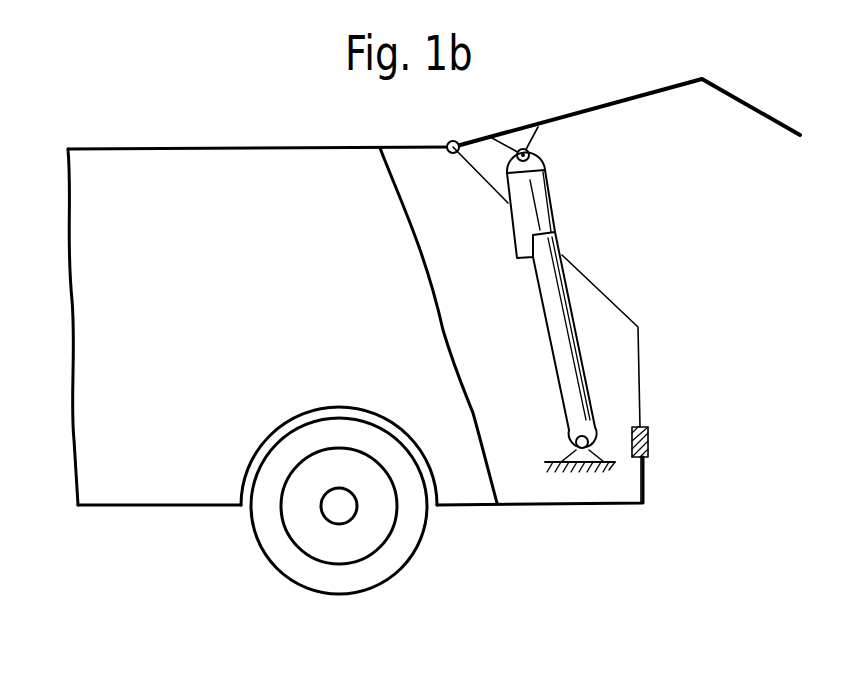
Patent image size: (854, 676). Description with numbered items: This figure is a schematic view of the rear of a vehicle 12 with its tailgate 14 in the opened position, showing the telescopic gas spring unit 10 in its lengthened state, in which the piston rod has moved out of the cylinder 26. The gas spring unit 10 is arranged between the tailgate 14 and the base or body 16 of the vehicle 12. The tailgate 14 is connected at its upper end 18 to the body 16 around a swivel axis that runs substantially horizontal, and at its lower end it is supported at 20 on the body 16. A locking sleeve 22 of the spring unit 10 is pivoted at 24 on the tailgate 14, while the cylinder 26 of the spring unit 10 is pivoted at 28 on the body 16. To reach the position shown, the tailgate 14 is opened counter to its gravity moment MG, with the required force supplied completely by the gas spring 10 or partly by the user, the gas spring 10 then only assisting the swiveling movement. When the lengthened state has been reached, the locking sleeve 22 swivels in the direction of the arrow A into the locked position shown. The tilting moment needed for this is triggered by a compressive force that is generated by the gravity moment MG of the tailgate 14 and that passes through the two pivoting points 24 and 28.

The telescopic gas spring unit 10 is at (540, 334).
The vehicle 12 is at (216, 175).
The tailgate 14 is at (656, 88).
The base or body 16 is at (565, 506).
The upper end of the tailgate 18 is at (453, 140).
The support point 20 is at (650, 441).
The locking sleeve 22 is at (518, 218).
The pivot point of the locking sleeve 24 is at (534, 155).
The cylinder 26 is at (575, 338).
The pivot point of the cylinder 28 is at (572, 443).
The arrow A is at (560, 222).
The gravity moment MG is at (556, 104).